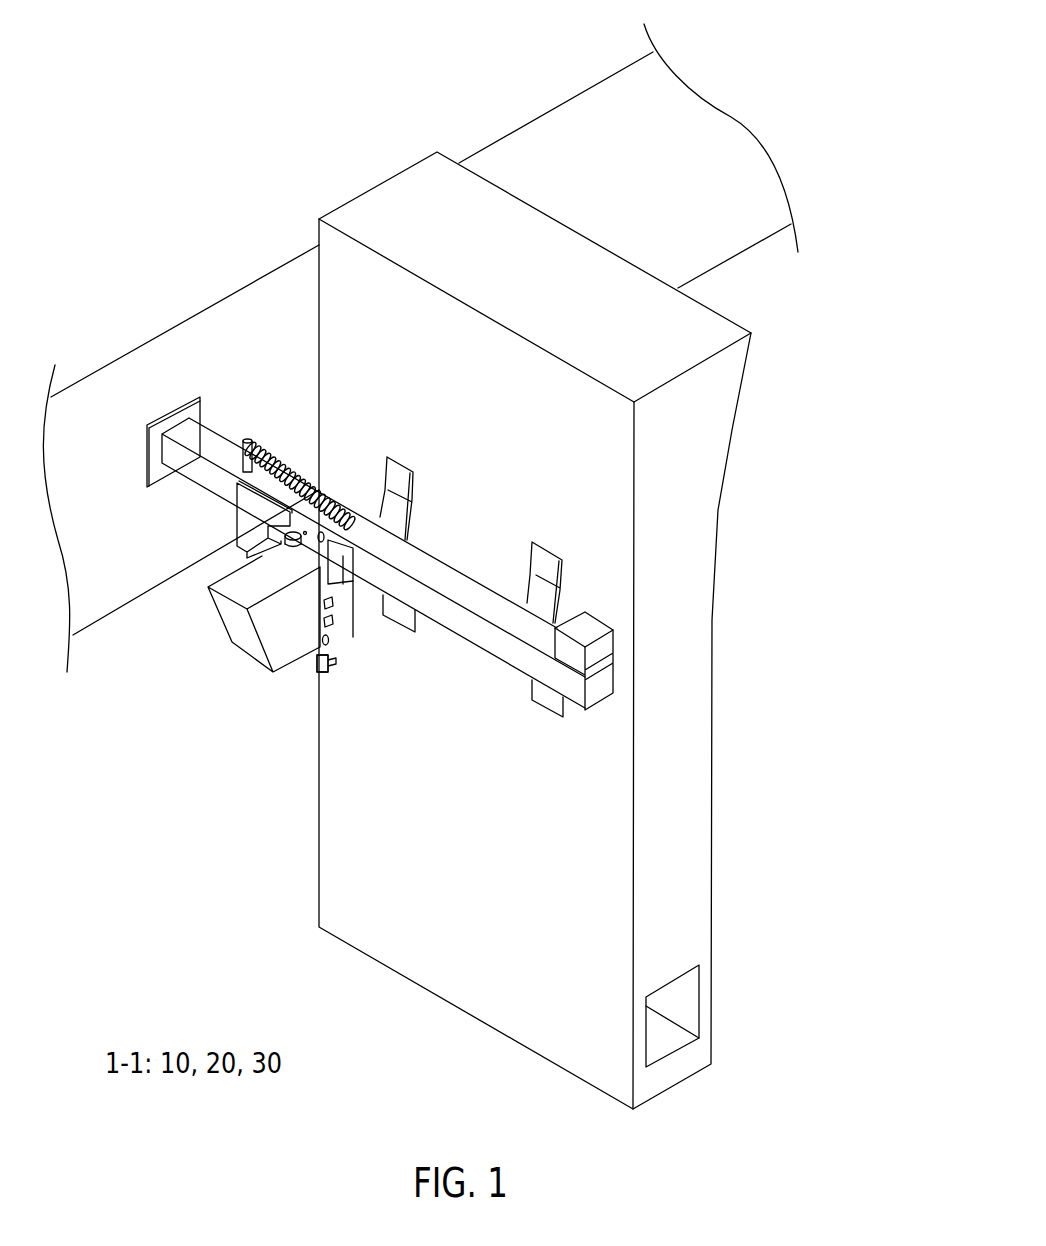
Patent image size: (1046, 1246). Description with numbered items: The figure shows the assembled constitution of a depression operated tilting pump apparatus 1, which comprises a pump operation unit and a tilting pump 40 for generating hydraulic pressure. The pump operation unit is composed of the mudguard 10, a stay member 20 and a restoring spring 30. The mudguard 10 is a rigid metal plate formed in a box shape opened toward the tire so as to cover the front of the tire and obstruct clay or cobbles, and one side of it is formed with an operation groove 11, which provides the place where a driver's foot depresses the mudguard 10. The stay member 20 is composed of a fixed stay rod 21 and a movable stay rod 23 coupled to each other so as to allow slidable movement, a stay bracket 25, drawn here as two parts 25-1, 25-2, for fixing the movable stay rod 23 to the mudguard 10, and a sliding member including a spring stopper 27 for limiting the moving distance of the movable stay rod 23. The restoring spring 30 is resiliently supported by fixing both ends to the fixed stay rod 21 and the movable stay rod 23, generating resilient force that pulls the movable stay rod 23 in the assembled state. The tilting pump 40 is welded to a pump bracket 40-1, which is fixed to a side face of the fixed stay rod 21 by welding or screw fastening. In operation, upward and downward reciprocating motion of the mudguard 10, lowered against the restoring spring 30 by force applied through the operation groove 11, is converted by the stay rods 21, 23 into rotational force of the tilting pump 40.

The tilting pump apparatus 1 is at (792, 422).
The mudguard 10 is at (685, 780).
The operation groove 11 is at (678, 997).
The stay member 20 is at (378, 418).
The fixed stay rod 21 is at (220, 447).
The movable stay rod 23 is at (365, 525).
The stay bracket 25 is at (833, 522).
The stay bracket part 25-1 is at (400, 483).
The stay bracket part 25-2 is at (548, 572).
The spring stopper 27 is at (317, 652).
The restoring spring 30 is at (214, 468).
The tilting pump 40 is at (250, 645).
The pump bracket 40-1 is at (238, 525).